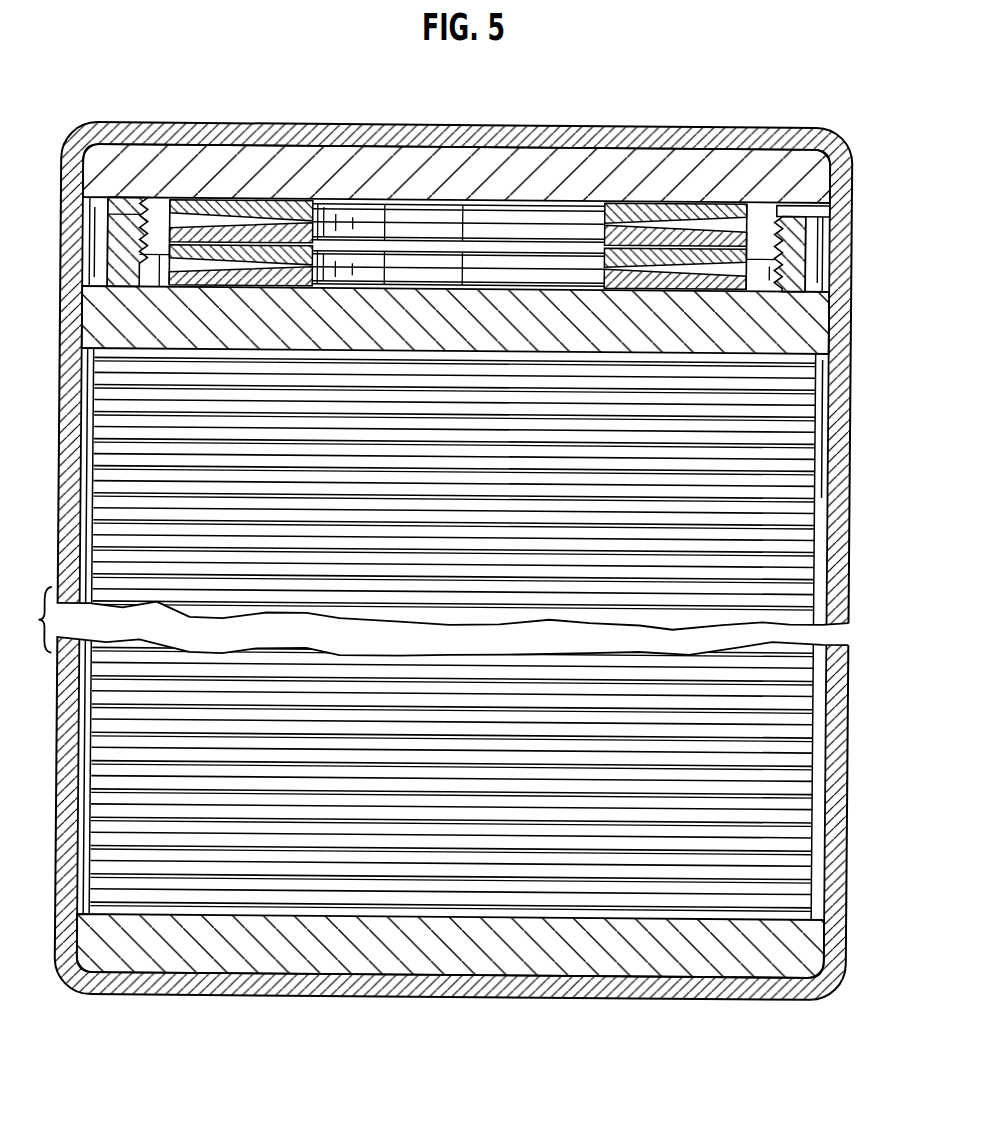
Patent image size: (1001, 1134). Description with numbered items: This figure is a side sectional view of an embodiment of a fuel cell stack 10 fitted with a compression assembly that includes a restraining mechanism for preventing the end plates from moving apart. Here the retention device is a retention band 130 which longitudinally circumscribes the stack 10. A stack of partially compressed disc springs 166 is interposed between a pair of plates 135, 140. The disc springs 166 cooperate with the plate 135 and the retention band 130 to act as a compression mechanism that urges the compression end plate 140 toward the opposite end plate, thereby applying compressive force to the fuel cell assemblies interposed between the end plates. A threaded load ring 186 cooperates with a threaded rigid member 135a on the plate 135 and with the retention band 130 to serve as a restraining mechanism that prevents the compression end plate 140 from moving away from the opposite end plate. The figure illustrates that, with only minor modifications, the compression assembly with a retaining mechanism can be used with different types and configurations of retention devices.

The stack 10 is at (473, 519).
The retention band 130 is at (820, 142).
The plate 135 is at (783, 182).
The threaded rigid member 135a is at (770, 212).
The compression end plate 140 is at (803, 312).
The disc springs 166 is at (645, 207).
The threaded load ring 186 is at (790, 243).